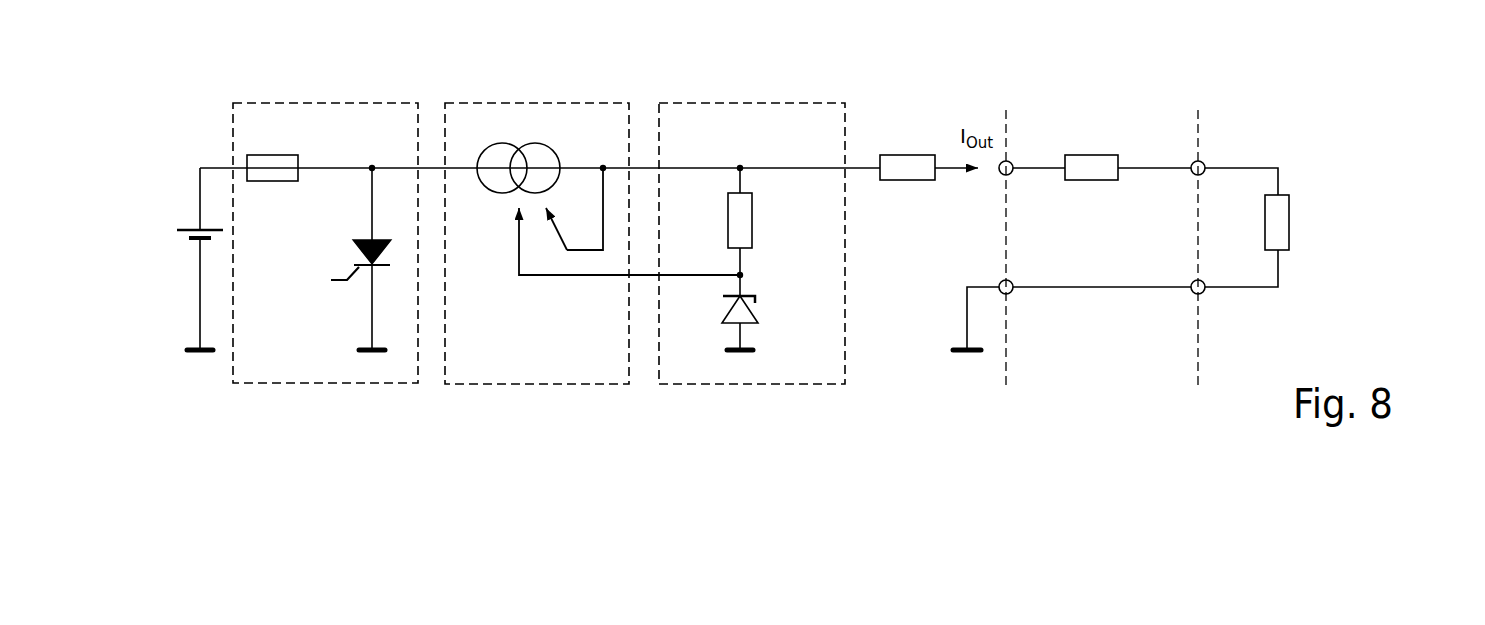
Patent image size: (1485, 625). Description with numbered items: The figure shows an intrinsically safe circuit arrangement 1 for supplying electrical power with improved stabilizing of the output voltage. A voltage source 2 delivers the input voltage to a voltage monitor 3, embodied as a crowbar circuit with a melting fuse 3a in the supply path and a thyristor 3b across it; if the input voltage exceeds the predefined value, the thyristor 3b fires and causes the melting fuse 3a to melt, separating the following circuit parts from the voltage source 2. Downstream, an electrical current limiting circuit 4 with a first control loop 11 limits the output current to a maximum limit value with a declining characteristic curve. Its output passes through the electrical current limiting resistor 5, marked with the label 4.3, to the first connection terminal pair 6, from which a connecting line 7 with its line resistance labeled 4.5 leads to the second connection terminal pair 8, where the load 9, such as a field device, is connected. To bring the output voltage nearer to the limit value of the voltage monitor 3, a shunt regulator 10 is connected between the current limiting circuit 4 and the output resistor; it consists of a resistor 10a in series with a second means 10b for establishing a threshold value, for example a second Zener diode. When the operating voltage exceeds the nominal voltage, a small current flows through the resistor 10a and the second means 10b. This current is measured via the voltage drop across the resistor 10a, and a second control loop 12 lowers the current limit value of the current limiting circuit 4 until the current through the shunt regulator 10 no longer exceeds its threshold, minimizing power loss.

The circuit arrangement 1 is at (1314, 132).
The voltage source 2 is at (153, 232).
The voltage monitor 3 is at (326, 90).
The melting fuse 3a is at (268, 157).
The thyristor 3b is at (382, 232).
The electrical current limiting circuit 4 is at (568, 92).
The external resistor R_EX 4.3 is at (907, 197).
The line resistor R_L 4.5 is at (1094, 197).
The electrical current limiting resistor 5 is at (907, 166).
The first connection terminal pair 6 is at (1017, 142).
The connecting line 7 is at (1153, 142).
The second connection terminal pair 8 is at (1208, 142).
The load 9 is at (1314, 227).
The shunt regulator 10 is at (804, 92).
The resistor 10a is at (770, 198).
The second means for establishing a threshold value 10b is at (772, 303).
The first control loop 11 is at (579, 236).
The second control loop 12 is at (536, 294).